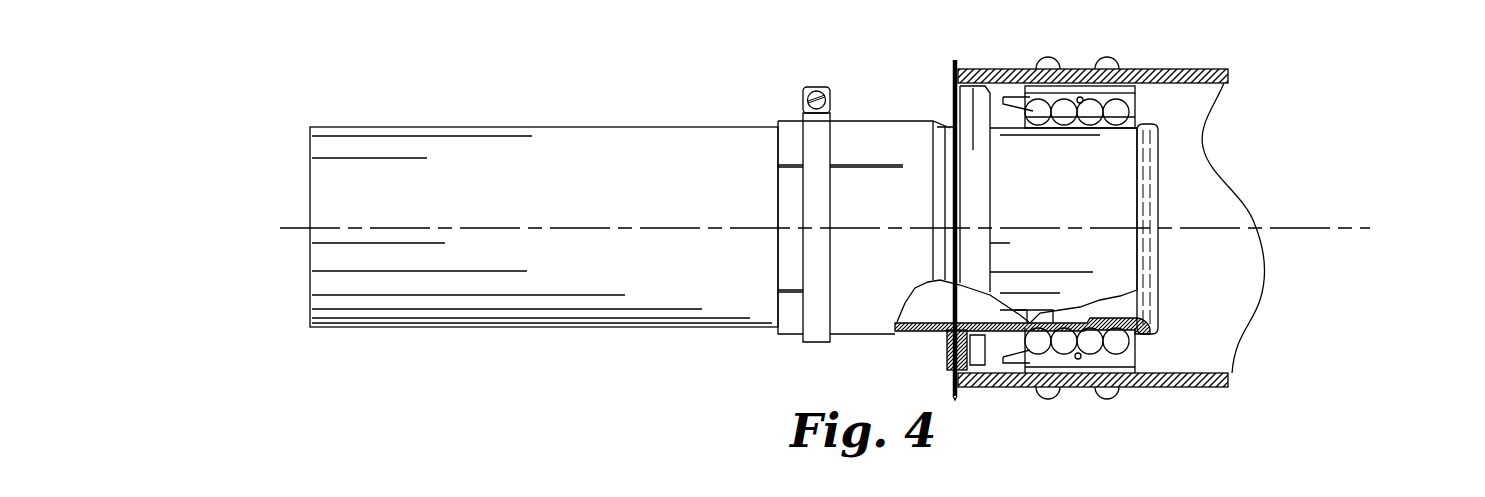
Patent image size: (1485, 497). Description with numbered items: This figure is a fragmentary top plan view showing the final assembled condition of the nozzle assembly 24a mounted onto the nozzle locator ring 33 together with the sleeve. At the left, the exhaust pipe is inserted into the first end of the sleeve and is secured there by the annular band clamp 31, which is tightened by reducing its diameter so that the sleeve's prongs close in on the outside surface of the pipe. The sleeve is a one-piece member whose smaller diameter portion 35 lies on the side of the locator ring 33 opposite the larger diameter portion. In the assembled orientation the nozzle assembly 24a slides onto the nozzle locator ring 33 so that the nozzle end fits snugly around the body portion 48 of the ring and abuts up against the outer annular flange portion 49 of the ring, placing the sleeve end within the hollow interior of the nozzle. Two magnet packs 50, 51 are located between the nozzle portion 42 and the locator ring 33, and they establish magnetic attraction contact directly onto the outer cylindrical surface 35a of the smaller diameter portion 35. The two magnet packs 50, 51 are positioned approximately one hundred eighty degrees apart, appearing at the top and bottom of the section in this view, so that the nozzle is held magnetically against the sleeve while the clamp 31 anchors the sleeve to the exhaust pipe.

The nozzle assembly 24a is at (1078, 388).
The annular band clamp 31 is at (817, 318).
The nozzle locator ring 33 is at (947, 338).
The smaller diameter portion 35 is at (1120, 256).
The outer cylindrical surface 35a is at (1113, 207).
The portion 42 is at (1155, 221).
The body portion 48 is at (960, 115).
The outer annular flange portion 49 is at (955, 63).
The magnet pack 50 is at (1138, 100).
The magnet pack 51 is at (1120, 347).